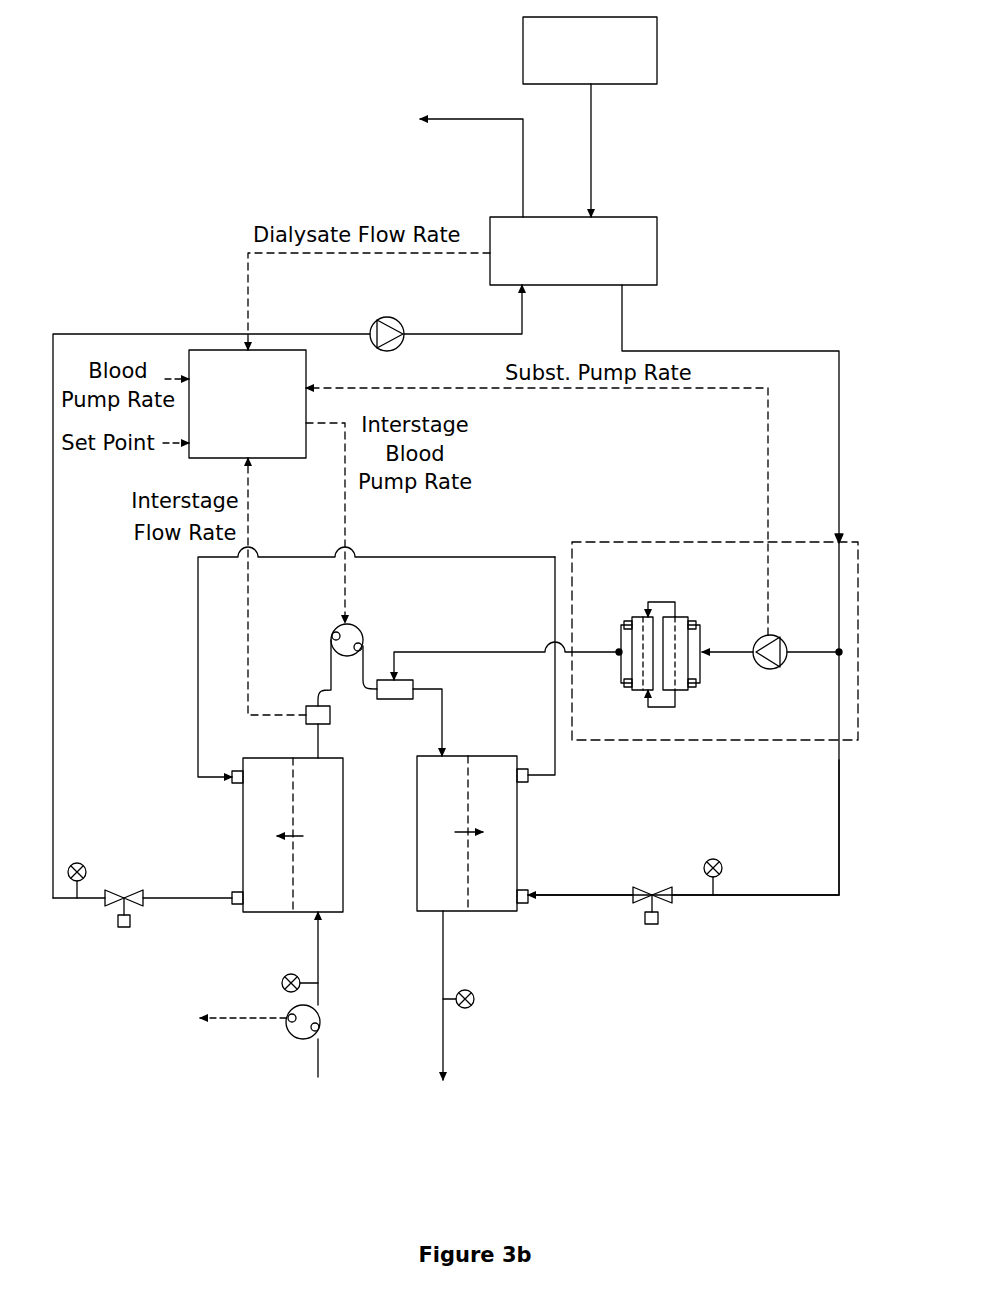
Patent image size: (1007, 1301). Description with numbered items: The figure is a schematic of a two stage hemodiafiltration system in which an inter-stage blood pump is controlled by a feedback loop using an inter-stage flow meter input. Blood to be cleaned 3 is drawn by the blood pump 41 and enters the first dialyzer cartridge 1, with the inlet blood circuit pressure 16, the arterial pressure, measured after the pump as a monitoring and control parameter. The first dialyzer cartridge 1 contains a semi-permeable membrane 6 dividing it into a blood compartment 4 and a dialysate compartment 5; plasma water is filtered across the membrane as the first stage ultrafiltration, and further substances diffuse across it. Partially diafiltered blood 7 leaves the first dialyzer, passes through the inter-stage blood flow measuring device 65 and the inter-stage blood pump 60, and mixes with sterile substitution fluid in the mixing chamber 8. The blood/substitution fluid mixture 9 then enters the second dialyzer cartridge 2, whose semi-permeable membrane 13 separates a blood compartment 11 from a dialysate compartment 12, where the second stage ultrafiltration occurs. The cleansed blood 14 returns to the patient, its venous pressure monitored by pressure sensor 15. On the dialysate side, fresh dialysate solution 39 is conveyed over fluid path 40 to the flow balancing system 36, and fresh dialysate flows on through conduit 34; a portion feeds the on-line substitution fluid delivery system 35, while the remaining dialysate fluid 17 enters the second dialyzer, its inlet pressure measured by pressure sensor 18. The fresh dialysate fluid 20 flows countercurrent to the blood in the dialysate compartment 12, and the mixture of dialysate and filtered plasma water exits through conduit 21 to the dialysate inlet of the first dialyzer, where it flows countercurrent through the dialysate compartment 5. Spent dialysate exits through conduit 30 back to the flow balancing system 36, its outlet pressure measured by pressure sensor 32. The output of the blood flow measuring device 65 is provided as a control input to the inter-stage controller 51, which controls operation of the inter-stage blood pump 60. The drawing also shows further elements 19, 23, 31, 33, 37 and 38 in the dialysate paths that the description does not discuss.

The first dialyzer cartridge 1 is at (220, 835).
The second dialyzer cartridge 2 is at (558, 833).
The blood to be cleaned 3 is at (323, 1023).
The blood compartment 4 is at (318, 870).
The dialysate compartment 5 is at (272, 870).
The semi-permeable membrane 6 is at (274, 835).
The partially diafiltered blood 7 is at (292, 702).
The mixing chamber 8 is at (498, 687).
The blood/substitution fluid mixture 9 is at (440, 721).
The blood compartment 11 is at (443, 883).
The dialysate compartment 12 is at (494, 883).
The semi-permeable membrane 13 is at (444, 833).
The cleansed blood 14 is at (416, 1040).
The pressure sensor 15 is at (443, 1018).
The inlet blood circuit pressure 16 is at (288, 965).
The remaining dialysate fluid 17 is at (862, 827).
The pressure sensor 18 is at (732, 891).
The dialysate inlet valve 19 is at (736, 887).
The fresh dialysate fluid 20 is at (580, 915).
The conduit 21 is at (538, 666).
The interstage dialysate line 23 is at (376, 662).
The conduit 30 is at (187, 880).
The dialysate outlet valve 31 is at (102, 892).
The pressure sensor 32 is at (83, 880).
The spent dialysate line 33 is at (287, 591).
The conduit 34 is at (706, 590).
The on-line substitution fluid delivery system 35 is at (715, 620).
The flow balancing system 36 is at (594, 251).
The dialysate pump 37 is at (399, 308).
The spent dialysate drain line 38 is at (424, 155).
The fresh dialysate solution 39 is at (610, 49).
The fluid path 40 is at (618, 150).
The blood pump 41 is at (193, 1033).
The inter-stage controller 51 is at (247, 421).
The inter-stage blood pump 60 is at (408, 636).
The inter-stage blood flow measuring device 65 is at (338, 741).